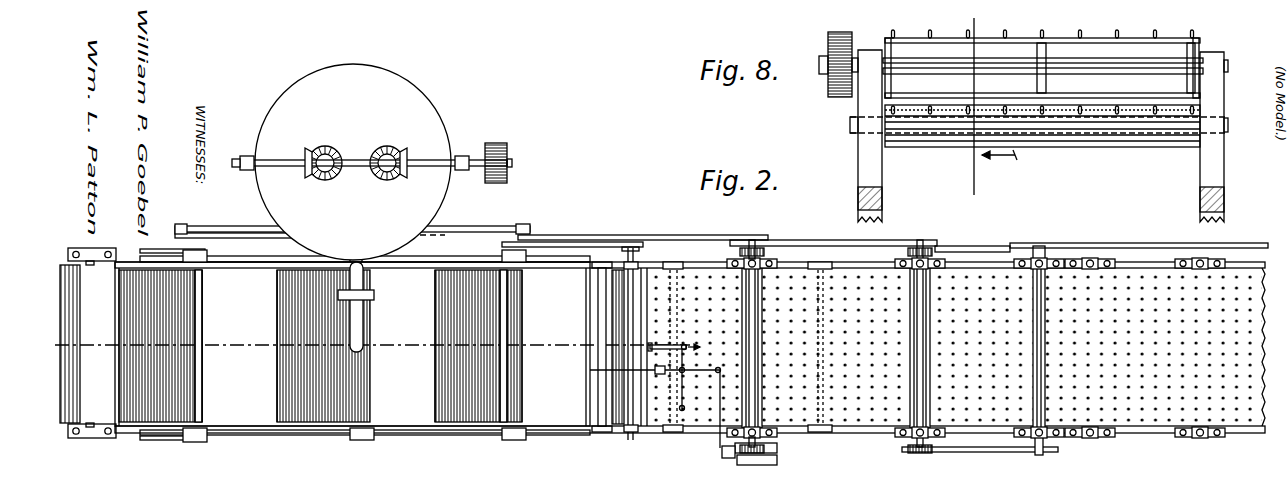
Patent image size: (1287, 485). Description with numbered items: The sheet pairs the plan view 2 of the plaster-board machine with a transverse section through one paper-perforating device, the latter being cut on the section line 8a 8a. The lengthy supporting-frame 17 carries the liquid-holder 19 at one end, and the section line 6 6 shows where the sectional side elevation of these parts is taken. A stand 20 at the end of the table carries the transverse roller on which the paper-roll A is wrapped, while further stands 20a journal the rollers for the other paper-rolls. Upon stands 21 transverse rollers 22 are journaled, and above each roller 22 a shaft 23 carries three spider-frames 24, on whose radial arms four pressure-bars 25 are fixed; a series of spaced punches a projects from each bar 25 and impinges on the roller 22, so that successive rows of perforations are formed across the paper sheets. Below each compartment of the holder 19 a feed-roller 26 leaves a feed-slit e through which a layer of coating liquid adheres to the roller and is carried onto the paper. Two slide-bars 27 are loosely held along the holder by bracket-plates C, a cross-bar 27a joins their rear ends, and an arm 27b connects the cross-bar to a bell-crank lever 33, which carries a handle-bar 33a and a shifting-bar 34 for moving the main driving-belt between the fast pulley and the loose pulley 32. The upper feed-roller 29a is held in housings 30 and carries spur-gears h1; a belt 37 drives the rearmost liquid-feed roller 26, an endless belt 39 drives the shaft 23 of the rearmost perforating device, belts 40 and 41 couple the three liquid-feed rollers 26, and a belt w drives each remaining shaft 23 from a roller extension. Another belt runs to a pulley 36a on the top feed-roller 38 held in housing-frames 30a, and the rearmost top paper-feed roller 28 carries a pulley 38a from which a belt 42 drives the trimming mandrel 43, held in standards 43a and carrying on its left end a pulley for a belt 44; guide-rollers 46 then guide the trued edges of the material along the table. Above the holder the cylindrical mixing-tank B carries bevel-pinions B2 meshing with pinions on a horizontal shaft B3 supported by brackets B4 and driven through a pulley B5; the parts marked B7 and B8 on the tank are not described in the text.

In FIG. 2, the perforated conveyor apron 2 is at (1269, 379).
In FIG. 2, the section line 6 6 is at (380, 343).
In FIG. 8, the frame portion 17 is at (1222, 200).
In FIG. 2, the frame portion 17 is at (975, 248).
In FIG. 2, the liquid-holder 19 is at (140, 430).
In FIG. 2, the stand 20 is at (98, 248).
In FIG. 2, the stands 20a is at (608, 268).
In FIG. 8, the stands 21 is at (876, 172).
In FIG. 8, the transverse rollers 22 is at (1110, 147).
In FIG. 8, the shaft 23 is at (1130, 68).
In FIG. 2, the shaft 23 is at (645, 250).
In FIG. 8, the spider-frames 24 is at (905, 48).
In FIG. 8, the pressure-bars 25 is at (1000, 90).
In FIG. 2, the feed-roller 26 is at (200, 402).
In FIG. 2, the slide-bars 27 is at (268, 447).
In FIG. 2, the cross-bar 27a is at (680, 268).
In FIG. 2, the arm 27b is at (680, 345).
In FIG. 2, the rearmost top paper-feed roller 28 is at (160, 249).
In FIG. 2, the upper feed-roller 29a is at (762, 418).
In FIG. 2, the housings 30 is at (768, 262).
In FIG. 2, the housing-frames 30a is at (945, 262).
In FIG. 2, the loose pulley 32 is at (600, 380).
In FIG. 2, the bell-crank lever 33 is at (708, 372).
In FIG. 2, the handle-bar 33a is at (686, 412).
In FIG. 2, the shifting-bar 34 is at (698, 410).
In FIG. 2, the pulley 36a is at (945, 246).
In FIG. 2, the belt 37 is at (735, 236).
In FIG. 2, the top feed-roller 38 is at (910, 420).
In FIG. 2, the pulley 38a is at (935, 452).
In FIG. 2, the endless belt 39 is at (575, 242).
In FIG. 2, the belt 40 is at (498, 228).
In FIG. 2, the belt 41 is at (245, 236).
In FIG. 2, the belt 42 is at (990, 452).
In FIG. 2, the mandrel 43 is at (1045, 452).
In FIG. 2, the standards 43a is at (1020, 262).
In FIG. 2, the belt 44 is at (1182, 243).
In FIG. 2, the guide-rollers 46 is at (1092, 259).
In FIG. 8, the section line 8a 8a is at (997, 102).
In FIG. 2, the paper-roll A is at (77, 344).
In FIG. 2, the mixing-tank B is at (436, 126).
In FIG. 2, the bevel-pinion B2 is at (326, 180).
In FIG. 2, the horizontal shaft B3 is at (357, 160).
In FIG. 2, the brackets B4 is at (388, 180).
In FIG. 2, the pulley B5 is at (495, 143).
In FIG. 2, the collar B7 is at (366, 293).
In FIG. 2, the rod B8 is at (366, 333).
In FIG. 2, the bracket-plates C is at (210, 250).
In FIG. 8, the punches a is at (1172, 88).
In FIG. 2, the punches a is at (597, 347).
In FIG. 2, the feed-slit e is at (190, 333).
In FIG. 2, the spur-gears h1 is at (738, 252).
In FIG. 8, the belt w is at (840, 97).